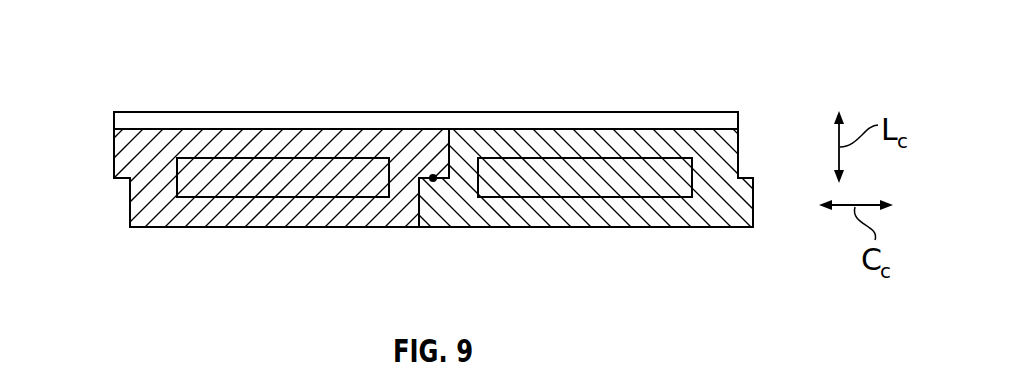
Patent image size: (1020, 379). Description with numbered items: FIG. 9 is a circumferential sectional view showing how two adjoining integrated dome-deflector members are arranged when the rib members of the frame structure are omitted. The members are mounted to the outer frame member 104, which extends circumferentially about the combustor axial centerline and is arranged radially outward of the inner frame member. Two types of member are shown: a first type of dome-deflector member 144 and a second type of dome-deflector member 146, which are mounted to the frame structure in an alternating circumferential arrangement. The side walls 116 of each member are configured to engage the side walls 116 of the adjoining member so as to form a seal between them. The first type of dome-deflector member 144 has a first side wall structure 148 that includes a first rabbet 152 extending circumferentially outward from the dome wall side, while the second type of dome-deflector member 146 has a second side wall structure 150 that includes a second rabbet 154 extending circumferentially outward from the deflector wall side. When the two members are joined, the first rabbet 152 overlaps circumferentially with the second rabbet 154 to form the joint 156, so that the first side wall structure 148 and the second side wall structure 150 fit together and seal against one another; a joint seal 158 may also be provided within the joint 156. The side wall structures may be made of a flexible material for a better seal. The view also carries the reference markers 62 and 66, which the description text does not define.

The second side 62 is at (382, 262).
The first side 66 is at (265, 102).
The outer frame member 104 is at (647, 120).
The side walls 116 is at (440, 135).
The first type of dome-deflector member 144 is at (260, 217).
The second type of dome-deflector member 146 is at (637, 212).
The first side wall structure 148 is at (130, 145).
The second side wall structure 150 is at (752, 208).
The first rabbet 152 is at (127, 182).
The second rabbet 154 is at (742, 173).
The joint 156 is at (418, 229).
The joint seal 158 is at (434, 182).